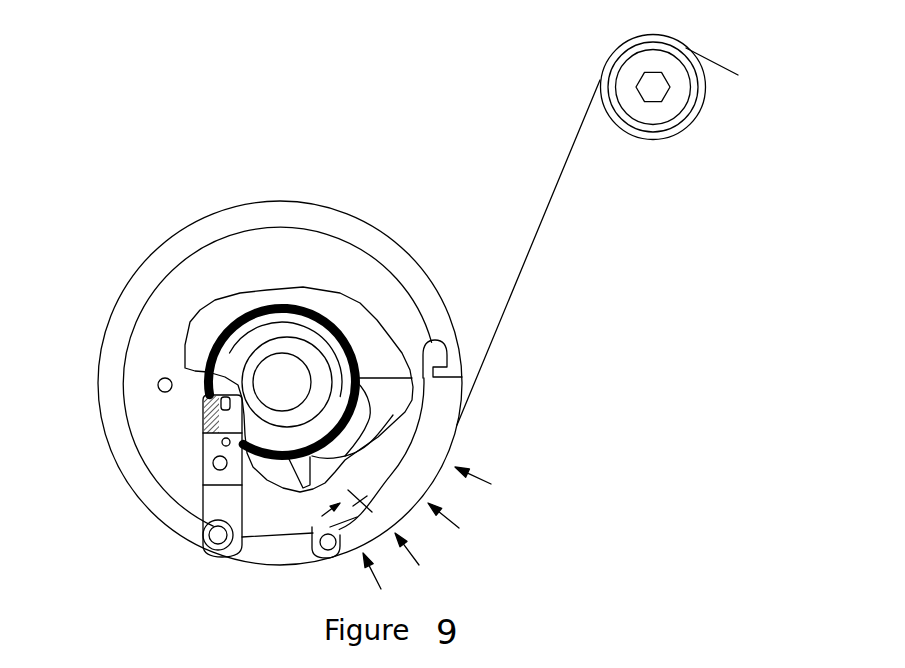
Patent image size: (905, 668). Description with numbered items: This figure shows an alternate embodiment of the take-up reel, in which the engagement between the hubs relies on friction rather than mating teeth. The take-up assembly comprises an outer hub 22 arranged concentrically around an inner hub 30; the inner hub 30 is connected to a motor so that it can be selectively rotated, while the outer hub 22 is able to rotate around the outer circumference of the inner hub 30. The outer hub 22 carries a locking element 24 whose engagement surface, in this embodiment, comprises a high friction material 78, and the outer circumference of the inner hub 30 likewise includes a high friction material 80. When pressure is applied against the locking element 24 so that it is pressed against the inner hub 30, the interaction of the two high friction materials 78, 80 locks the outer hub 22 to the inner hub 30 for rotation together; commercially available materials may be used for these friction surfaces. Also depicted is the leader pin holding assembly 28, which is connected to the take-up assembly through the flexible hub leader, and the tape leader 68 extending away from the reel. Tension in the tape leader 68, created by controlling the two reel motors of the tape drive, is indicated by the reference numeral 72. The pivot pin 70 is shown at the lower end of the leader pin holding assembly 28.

The outer hub 22 is at (273, 383).
The locking element 24 is at (461, 533).
The leader pin holding assembly 28 is at (206, 507).
The inner hub 30 is at (313, 286).
The tape leader 68 is at (567, 170).
The pivot pin 70 is at (226, 569).
The tension in the tape leader 72 is at (554, 252).
The high friction material 78 is at (352, 417).
The high friction material 80 is at (358, 377).